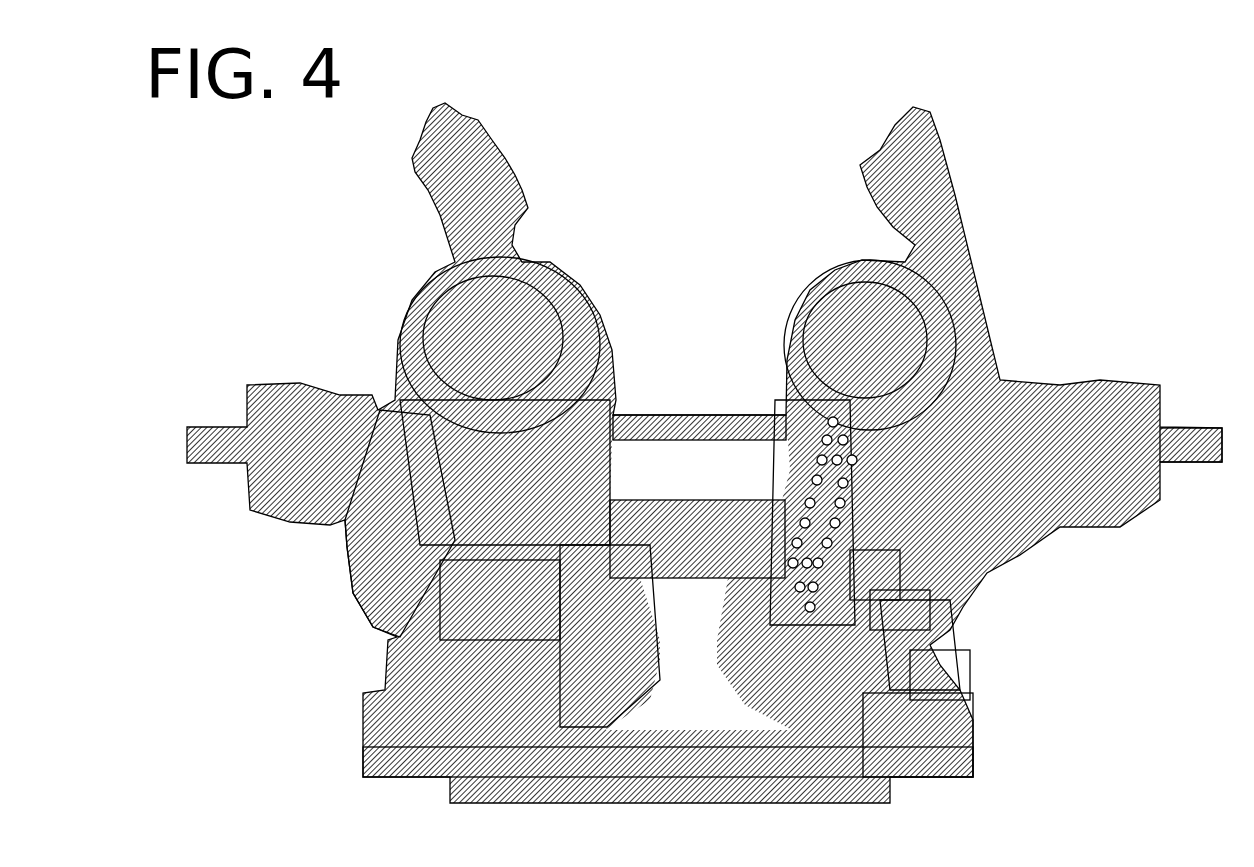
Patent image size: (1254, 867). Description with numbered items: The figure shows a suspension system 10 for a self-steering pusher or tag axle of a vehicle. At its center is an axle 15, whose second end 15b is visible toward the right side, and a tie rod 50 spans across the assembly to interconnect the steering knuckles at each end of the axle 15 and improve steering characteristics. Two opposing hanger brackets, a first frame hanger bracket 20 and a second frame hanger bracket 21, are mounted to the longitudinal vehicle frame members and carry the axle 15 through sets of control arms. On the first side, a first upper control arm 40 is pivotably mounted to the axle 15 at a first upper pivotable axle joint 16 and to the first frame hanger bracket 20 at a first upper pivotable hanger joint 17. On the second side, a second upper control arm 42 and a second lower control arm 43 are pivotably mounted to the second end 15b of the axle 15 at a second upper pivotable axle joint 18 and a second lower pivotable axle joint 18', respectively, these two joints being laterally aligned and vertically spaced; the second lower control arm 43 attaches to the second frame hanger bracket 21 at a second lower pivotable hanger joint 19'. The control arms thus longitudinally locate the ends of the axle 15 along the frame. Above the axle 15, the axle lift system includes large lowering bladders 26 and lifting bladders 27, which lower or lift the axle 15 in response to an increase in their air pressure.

The suspension system 10 is at (1056, 318).
The axle 15 is at (640, 488).
The second end of the axle 15b is at (1027, 533).
The first upper pivotable axle joint 16 is at (487, 515).
The first upper pivotable hanger joint 17 is at (540, 640).
The second upper pivotable axle joint 18 is at (939, 491).
The second lower pivotable axle joint 18' is at (1013, 673).
The second lower pivotable hanger joint 19' is at (957, 751).
The first frame hanger bracket 20 is at (345, 568).
The second frame hanger bracket 21 is at (890, 600).
The lowering bladders 26 is at (578, 313).
The lifting bladders 27 is at (632, 622).
The first upper control arm 40 is at (492, 594).
The second upper control arm 42 is at (868, 573).
The second lower control arm 43 is at (942, 676).
The tie rod 50 is at (630, 412).